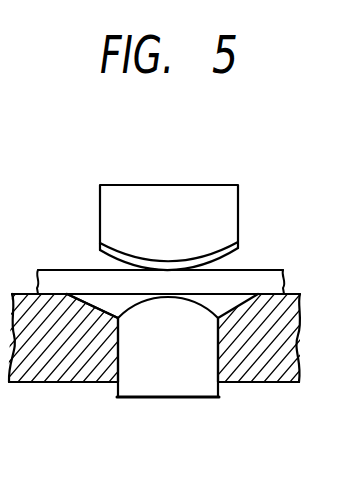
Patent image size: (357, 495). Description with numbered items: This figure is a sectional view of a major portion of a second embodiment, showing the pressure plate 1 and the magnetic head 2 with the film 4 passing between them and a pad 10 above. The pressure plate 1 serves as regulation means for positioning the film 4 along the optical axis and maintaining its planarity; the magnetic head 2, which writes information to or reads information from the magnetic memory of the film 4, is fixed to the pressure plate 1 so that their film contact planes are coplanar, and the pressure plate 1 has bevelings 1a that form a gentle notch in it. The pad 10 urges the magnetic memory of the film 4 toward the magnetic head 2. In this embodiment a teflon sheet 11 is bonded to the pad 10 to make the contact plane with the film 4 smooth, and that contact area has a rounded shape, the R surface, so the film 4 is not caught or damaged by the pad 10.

The pressure plate 1 is at (53, 363).
The bevelings 1a is at (87, 303).
The magnetic head 2 is at (192, 383).
The film 4 is at (266, 283).
The pad 10 is at (214, 208).
The teflon sheet 11 is at (123, 260).
The R surface R is at (190, 257).